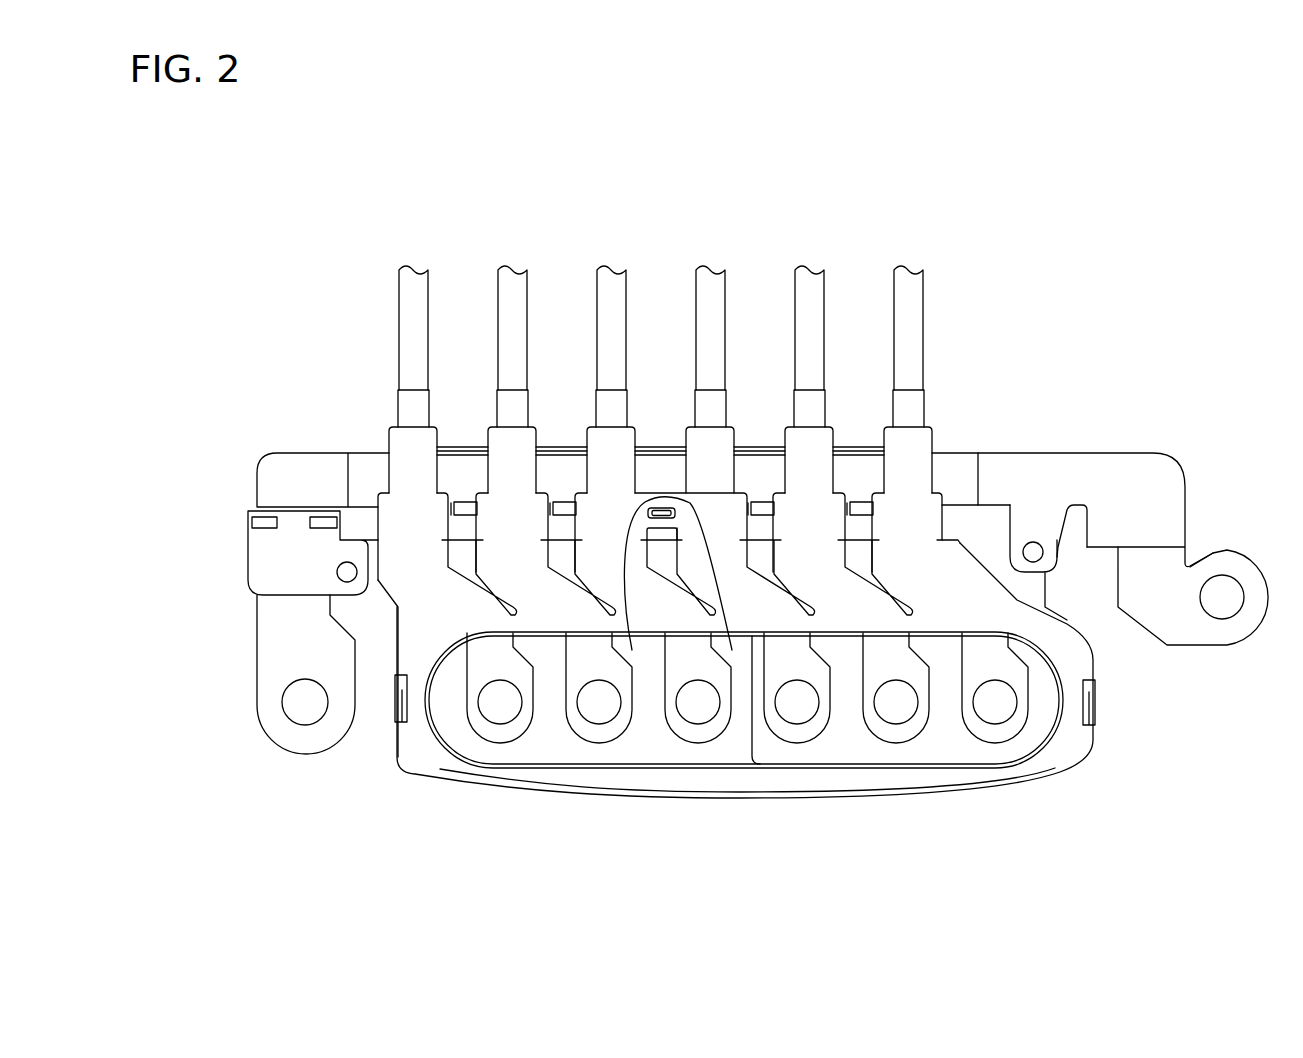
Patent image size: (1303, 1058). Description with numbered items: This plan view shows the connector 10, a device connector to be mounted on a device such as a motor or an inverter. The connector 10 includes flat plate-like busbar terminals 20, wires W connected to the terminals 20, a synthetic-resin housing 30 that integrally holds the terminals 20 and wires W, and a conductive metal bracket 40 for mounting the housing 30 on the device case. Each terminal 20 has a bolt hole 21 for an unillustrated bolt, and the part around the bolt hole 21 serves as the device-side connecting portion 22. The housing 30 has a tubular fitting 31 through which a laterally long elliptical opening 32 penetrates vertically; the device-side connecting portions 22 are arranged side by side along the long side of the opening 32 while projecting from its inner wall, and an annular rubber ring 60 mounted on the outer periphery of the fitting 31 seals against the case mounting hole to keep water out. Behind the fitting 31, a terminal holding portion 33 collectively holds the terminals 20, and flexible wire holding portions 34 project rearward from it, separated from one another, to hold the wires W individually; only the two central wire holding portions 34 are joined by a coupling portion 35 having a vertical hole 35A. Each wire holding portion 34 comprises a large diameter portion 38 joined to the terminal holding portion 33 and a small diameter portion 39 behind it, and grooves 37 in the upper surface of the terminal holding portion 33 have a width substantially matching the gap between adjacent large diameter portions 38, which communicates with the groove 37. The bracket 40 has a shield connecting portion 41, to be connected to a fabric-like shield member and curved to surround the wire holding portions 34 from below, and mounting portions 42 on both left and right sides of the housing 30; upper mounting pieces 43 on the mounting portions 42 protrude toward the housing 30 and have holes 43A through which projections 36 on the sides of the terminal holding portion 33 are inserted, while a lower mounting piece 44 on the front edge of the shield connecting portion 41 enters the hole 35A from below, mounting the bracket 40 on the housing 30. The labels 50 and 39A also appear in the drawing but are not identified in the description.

The connector 10 is at (657, 222).
The wire W is at (661, 303).
The wire connection portion 50 is at (676, 368).
The wire holding portion 34 is at (1025, 392).
The shield connecting portion 41 is at (862, 468).
The lower mounting piece 44 is at (660, 507).
The coupling portion 35 is at (627, 600).
The hole 35A is at (732, 650).
The groove 37 is at (558, 555).
The terminal connecting portion 39A is at (908, 425).
The small diameter portion 39 is at (930, 468).
The large diameter portion 38 is at (937, 515).
The housing 30 is at (1007, 505).
The projection 36 is at (350, 570).
The bracket 40 is at (1138, 456).
The upper mounting piece 43 is at (355, 592).
The hole 43A is at (337, 568).
The mounting portion 42 is at (272, 630).
The terminal holding portion 33 is at (843, 593).
The fitting 31 is at (787, 788).
The opening 32 is at (865, 752).
The rubber ring 60 is at (958, 793).
The terminal 20 is at (700, 735).
The device-side connecting portion 22 is at (692, 722).
The bolt hole 21 is at (715, 728).